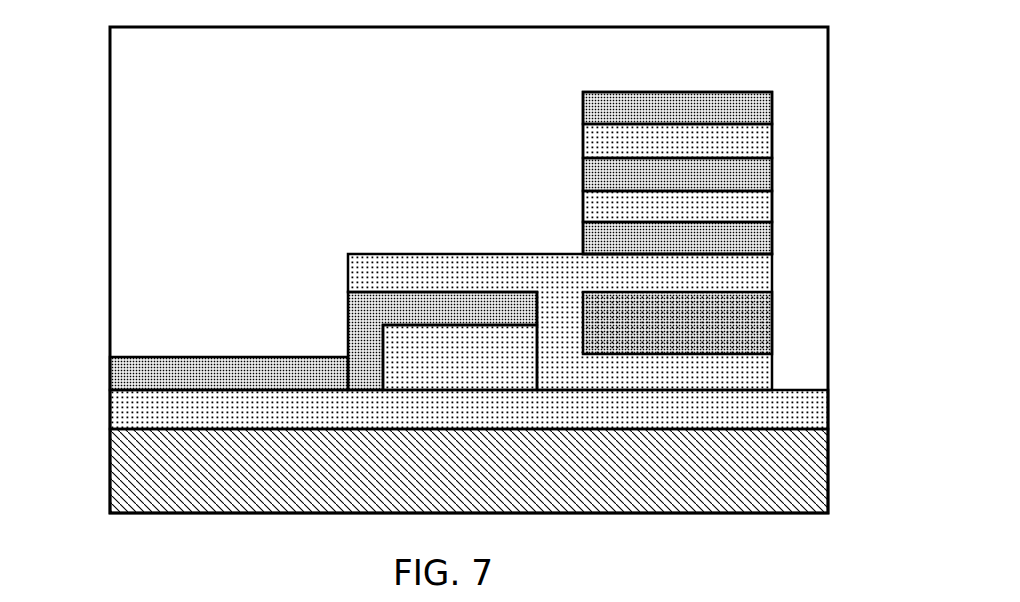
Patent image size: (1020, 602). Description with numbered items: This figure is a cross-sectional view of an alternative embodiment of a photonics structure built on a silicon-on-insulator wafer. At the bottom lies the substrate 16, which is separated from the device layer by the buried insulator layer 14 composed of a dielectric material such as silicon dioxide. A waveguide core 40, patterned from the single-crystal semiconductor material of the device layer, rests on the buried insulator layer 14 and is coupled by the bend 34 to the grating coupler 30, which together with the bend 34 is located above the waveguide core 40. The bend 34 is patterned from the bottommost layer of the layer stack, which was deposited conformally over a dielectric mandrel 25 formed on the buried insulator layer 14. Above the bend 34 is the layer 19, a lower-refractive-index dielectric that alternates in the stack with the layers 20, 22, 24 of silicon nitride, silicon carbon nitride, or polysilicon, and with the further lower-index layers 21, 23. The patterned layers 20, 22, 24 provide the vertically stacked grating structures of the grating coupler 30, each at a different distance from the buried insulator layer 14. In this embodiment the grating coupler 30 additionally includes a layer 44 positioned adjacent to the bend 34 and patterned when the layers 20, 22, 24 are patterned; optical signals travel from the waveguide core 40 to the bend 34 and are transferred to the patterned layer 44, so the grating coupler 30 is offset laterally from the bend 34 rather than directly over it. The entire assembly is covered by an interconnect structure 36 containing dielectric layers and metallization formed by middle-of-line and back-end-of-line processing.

The interconnect structure 36 is at (130, 178).
The substrate 16 is at (795, 481).
The buried insulator layer 14 is at (795, 411).
The waveguide core 40 is at (145, 371).
The layer 19 is at (400, 272).
The bend 34 is at (360, 339).
The mandrel 25 is at (463, 371).
The layer 44 is at (745, 330).
The grating coupler 30 is at (440, 135).
The layer 24 is at (607, 110).
The layer 23 is at (747, 143).
The layer 22 is at (607, 175).
The layer 21 is at (747, 212).
The layer 20 is at (607, 240).